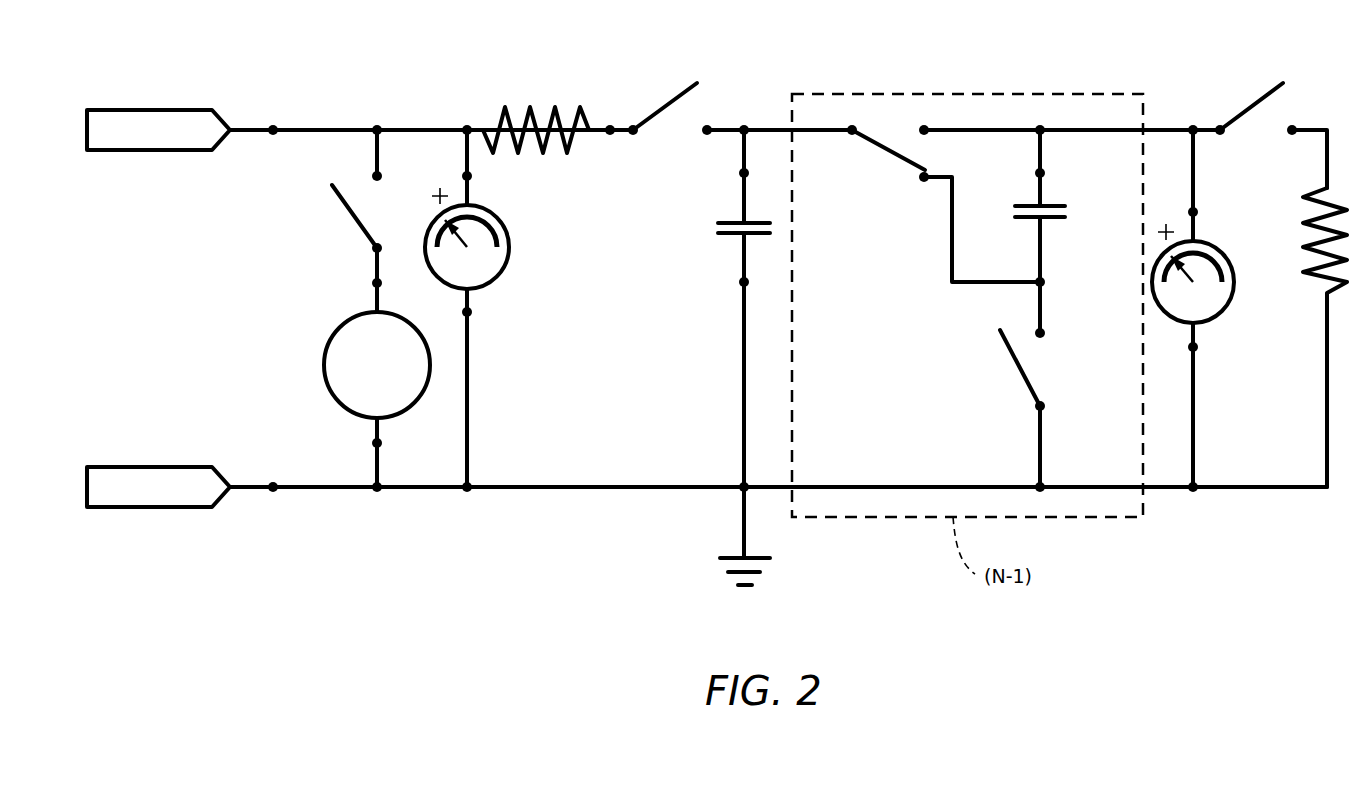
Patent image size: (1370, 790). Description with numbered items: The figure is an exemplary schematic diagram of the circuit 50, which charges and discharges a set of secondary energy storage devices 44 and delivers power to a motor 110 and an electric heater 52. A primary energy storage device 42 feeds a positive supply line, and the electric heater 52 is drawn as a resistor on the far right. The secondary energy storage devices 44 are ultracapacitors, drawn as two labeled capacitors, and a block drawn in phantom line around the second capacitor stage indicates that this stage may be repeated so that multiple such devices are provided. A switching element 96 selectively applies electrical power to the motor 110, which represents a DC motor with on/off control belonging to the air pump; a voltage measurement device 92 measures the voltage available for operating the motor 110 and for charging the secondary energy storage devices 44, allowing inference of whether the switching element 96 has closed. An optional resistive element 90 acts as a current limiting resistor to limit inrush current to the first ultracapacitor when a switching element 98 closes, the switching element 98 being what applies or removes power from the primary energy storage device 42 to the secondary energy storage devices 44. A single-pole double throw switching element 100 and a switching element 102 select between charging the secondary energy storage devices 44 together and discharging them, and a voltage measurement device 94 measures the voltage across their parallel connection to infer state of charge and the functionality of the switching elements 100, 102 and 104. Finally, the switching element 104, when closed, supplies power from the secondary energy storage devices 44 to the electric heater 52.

The primary energy storage device 42 is at (150, 110).
The secondary energy storage devices 44 is at (730, 242).
The circuit 50 is at (360, 534).
The electric heater 52 is at (1314, 246).
The resistive element 90 is at (546, 137).
The voltage measurement device 92 is at (500, 272).
The voltage measurement device 94 is at (1222, 303).
The switching element 96 is at (340, 214).
The switching element 98 is at (684, 111).
The switching element 100 is at (886, 164).
The switching element 102 is at (1008, 380).
The switching element 104 is at (1280, 110).
The motor 110 is at (330, 394).